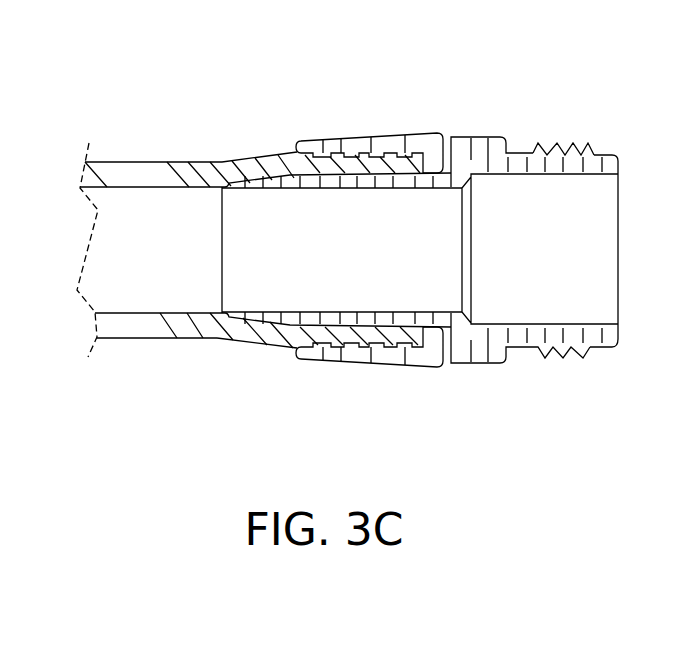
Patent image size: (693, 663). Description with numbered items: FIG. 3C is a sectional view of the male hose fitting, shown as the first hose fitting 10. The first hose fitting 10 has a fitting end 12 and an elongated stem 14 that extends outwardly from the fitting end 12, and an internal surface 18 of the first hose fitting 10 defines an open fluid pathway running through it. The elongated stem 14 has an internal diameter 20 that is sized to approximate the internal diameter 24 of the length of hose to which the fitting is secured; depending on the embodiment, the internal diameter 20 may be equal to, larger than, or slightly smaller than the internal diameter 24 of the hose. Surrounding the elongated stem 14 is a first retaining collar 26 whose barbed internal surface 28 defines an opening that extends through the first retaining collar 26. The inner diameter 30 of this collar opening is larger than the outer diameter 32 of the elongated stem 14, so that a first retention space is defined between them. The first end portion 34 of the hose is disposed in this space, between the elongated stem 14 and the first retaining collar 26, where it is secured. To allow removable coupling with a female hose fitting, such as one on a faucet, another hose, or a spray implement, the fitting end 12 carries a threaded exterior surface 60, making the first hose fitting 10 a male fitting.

The first hose fitting 10 is at (500, 105).
The fitting end 12 is at (587, 133).
The elongated stem 14 is at (290, 321).
The internal surface 18 is at (410, 284).
The internal diameter of the elongated stem 20 is at (263, 189).
The internal diameter of the length of hose 24 is at (155, 187).
The first retaining collar 26 is at (405, 132).
The barbed internal surface 28 is at (373, 150).
The inner diameter of the first retaining collar opening 30 is at (370, 154).
The outer diameter of the elongated stem 32 is at (319, 173).
The first end portion 34 is at (211, 326).
The threaded exterior surface 60 is at (569, 362).